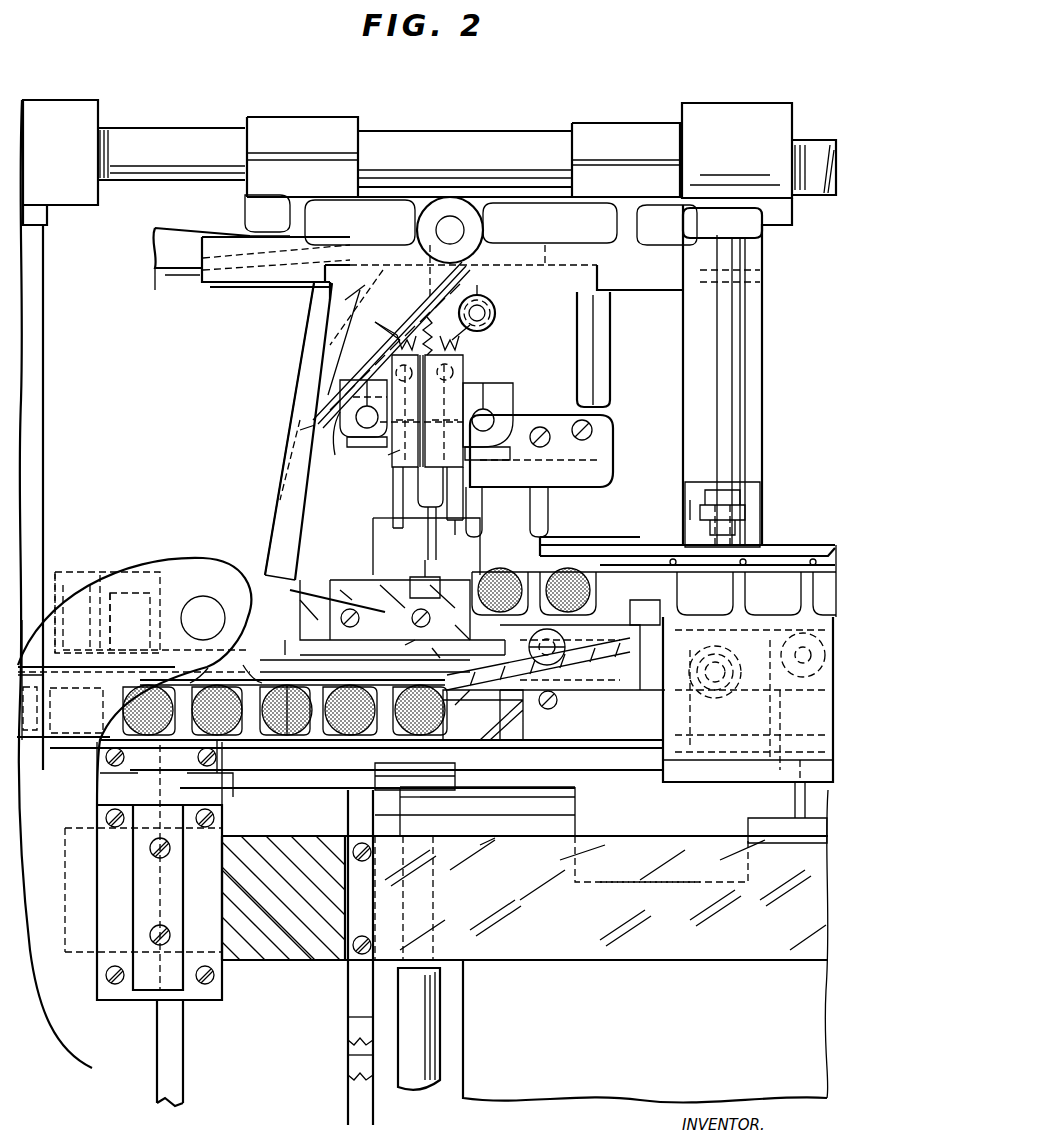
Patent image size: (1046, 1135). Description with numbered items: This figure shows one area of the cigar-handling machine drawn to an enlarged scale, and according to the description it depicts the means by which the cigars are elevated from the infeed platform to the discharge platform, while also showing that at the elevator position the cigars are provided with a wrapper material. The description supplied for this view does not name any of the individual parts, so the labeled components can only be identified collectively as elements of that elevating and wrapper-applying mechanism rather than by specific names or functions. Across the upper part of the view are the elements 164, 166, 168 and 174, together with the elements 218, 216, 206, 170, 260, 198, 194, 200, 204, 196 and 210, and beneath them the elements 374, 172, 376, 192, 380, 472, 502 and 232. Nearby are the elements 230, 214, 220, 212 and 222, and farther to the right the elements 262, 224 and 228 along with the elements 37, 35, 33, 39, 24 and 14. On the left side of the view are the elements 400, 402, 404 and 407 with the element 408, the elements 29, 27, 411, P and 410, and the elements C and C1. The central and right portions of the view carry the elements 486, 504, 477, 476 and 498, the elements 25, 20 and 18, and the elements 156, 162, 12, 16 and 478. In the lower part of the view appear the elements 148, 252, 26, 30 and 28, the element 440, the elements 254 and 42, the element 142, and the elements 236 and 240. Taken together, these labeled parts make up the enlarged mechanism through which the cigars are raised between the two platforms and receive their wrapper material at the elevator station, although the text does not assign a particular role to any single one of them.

The shaft 164 is at (335, 133).
The frame 166 is at (272, 204).
The pivot boss 168 is at (491, 230).
The bracket 174 is at (165, 290).
The link 218 is at (345, 298).
The spring 216 is at (375, 322).
The slide block 206 is at (385, 356).
The arm 170 is at (274, 429).
The arm edge 260 is at (259, 416).
The pivot pin 198 is at (356, 418).
The arm portion 194 is at (323, 434).
The tab 200 is at (350, 445).
The rod 204 is at (366, 470).
The pin 196 is at (381, 472).
The rod 210 is at (400, 507).
The housing 374 is at (378, 525).
The plate 172 is at (362, 600).
The rod 376 is at (342, 604).
The plunger 192 is at (420, 545).
The housing 380 is at (426, 552).
The ball 472 is at (493, 575).
The ball 502 is at (551, 583).
The block 232 is at (425, 590).
The pin 230 is at (487, 280).
The pulley 214 is at (497, 308).
The pulley groove 220 is at (524, 313).
The pulley hub 212 is at (487, 330).
The tab 222 is at (527, 402).
The bar 262 is at (627, 349).
The bracket 224 is at (577, 451).
The slot 228 is at (535, 500).
The bar 37 is at (580, 551).
The bar 35 is at (591, 551).
The bar 33 is at (606, 551).
The clamp 39 is at (762, 515).
The rail 24 is at (797, 560).
The block 14 is at (643, 598).
The member 400 is at (88, 580).
The member 402 is at (112, 592).
The member 404 is at (137, 605).
The cam 407 is at (200, 603).
The cam hub 408 is at (262, 612).
The link 29 is at (243, 654).
The link 27 is at (198, 663).
The screw 411 is at (408, 652).
The pivot P is at (551, 643).
The bar 410 is at (308, 646).
The cam C is at (694, 520).
The cam C1 is at (420, 697).
The link 486 is at (538, 672).
The roller 504 is at (586, 647).
The gear 477 is at (760, 656).
The housing 476 is at (688, 718).
The block 498 is at (538, 718).
The ball 25 is at (286, 730).
The ball carrier 20 is at (217, 747).
The ball track 18 is at (345, 749).
The block 156 is at (436, 769).
The block 162 is at (500, 726).
The base 12 is at (517, 784).
The housing 16 is at (748, 789).
The tab 478 is at (780, 816).
The bar 148 is at (410, 823).
The slot 252 is at (645, 858).
The plate 26 is at (185, 848).
The block 30 is at (267, 931).
The plate 28 is at (159, 1021).
The rod 440 is at (206, 1053).
The column 254 is at (358, 1020).
The column 42 is at (323, 1059).
The pin 142 is at (466, 1029).
The base block 236 is at (610, 957).
The base block 240 is at (754, 956).